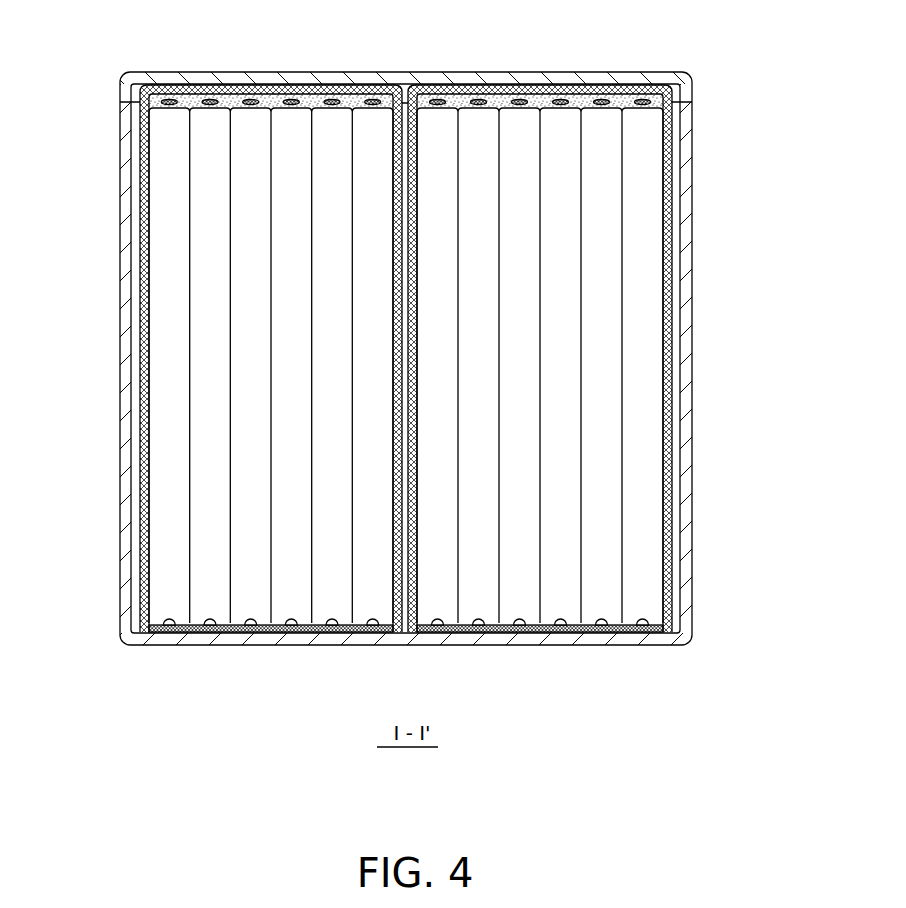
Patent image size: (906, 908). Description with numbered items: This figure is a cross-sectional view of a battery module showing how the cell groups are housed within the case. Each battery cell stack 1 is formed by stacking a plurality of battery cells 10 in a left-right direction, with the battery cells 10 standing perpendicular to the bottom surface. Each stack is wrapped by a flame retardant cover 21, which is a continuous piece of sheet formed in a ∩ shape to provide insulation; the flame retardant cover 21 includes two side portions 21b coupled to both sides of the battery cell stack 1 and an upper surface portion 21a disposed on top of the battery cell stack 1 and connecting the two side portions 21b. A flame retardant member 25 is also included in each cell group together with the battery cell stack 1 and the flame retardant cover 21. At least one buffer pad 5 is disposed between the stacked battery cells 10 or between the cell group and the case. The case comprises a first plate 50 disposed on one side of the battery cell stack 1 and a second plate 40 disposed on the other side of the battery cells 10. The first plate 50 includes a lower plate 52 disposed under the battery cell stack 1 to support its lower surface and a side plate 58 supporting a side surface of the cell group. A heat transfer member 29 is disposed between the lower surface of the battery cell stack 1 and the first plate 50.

The battery cell stack 1 is at (350, 358).
The battery cell 10 is at (170, 537).
The buffer pad 5 is at (676, 153).
The flame retardant cover 21 is at (468, 90).
The upper surface portion 21a is at (238, 91).
The side portion 21b is at (395, 318).
The flame retardant member 25 is at (547, 100).
The heat transfer member 29 is at (548, 636).
The second plate 40 is at (627, 83).
The first plate 50 is at (672, 692).
The lower plate 52 is at (657, 638).
The side plate 58 is at (692, 580).